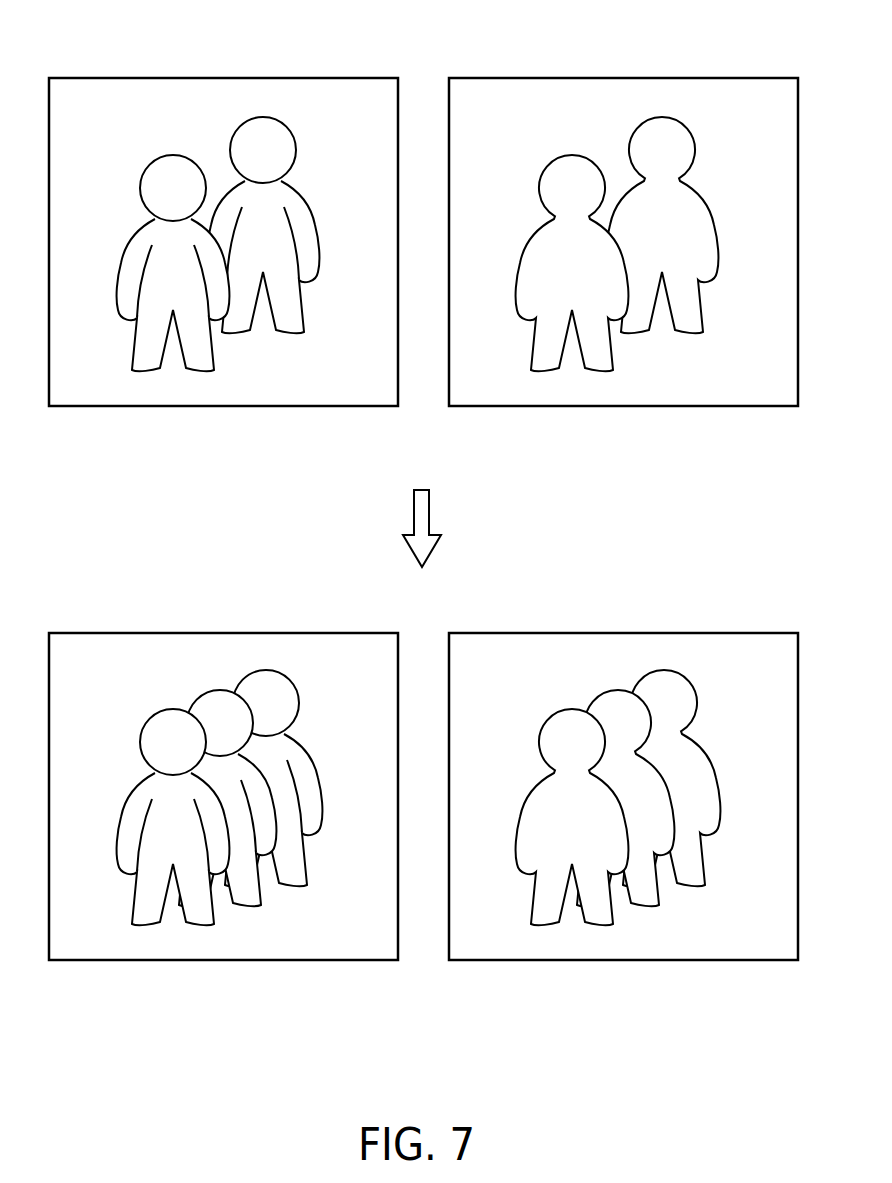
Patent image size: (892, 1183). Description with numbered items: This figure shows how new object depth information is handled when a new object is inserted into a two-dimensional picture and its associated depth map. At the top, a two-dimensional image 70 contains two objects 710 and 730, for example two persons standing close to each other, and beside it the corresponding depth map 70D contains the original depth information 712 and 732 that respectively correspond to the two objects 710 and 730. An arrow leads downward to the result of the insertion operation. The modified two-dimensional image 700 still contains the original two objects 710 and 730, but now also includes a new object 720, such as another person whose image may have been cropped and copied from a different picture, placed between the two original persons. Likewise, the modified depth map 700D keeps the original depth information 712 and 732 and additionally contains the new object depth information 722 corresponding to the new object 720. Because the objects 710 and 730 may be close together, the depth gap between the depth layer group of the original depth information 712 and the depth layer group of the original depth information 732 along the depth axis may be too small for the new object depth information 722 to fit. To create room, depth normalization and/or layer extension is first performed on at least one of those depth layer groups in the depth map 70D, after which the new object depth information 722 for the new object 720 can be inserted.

The 2D image 70 is at (225, 408).
The depth map 70D is at (625, 408).
The modified 2D image 700 is at (338, 631).
The modified depth map 700D is at (738, 631).
The object 710 is at (173, 153).
The new object 720 is at (214, 691).
The object 730 is at (267, 117).
The original depth information 712 is at (573, 153).
The new object depth information 722 is at (614, 691).
The original depth information 732 is at (660, 117).